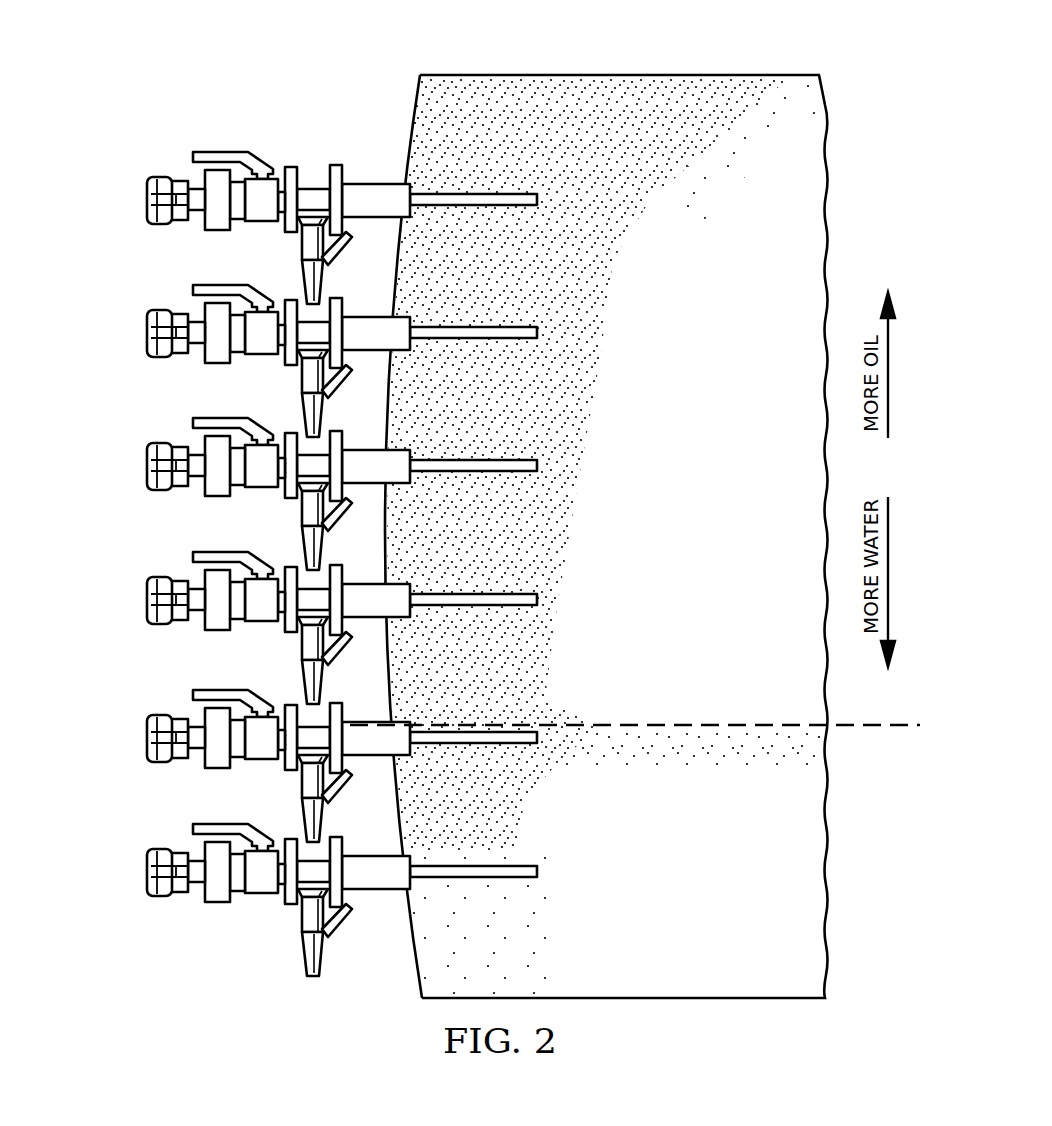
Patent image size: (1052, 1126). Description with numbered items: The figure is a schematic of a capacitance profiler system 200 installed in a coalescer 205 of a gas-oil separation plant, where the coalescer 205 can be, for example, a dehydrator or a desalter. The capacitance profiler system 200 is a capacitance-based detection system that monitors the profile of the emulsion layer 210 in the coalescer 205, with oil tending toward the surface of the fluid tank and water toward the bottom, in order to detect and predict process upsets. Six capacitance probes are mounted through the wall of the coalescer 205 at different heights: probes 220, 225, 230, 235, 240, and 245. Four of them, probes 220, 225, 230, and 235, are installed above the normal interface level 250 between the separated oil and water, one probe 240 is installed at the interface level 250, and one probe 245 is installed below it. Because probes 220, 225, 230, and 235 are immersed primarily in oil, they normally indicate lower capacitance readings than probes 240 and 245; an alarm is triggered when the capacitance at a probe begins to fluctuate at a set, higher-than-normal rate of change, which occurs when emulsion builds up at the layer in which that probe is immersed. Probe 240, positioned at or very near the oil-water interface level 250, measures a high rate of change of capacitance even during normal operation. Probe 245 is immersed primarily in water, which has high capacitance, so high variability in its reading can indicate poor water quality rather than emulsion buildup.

The capacitance profiler system 200 is at (857, 964).
The coalescer 205 is at (387, 85).
The emulsion layer 210 is at (622, 72).
The probe 220 is at (121, 200).
The probe 225 is at (121, 333).
The probe 230 is at (121, 465).
The probe 235 is at (121, 598).
The probe 240 is at (121, 733).
The probe 245 is at (121, 868).
The interface level 250 is at (880, 752).